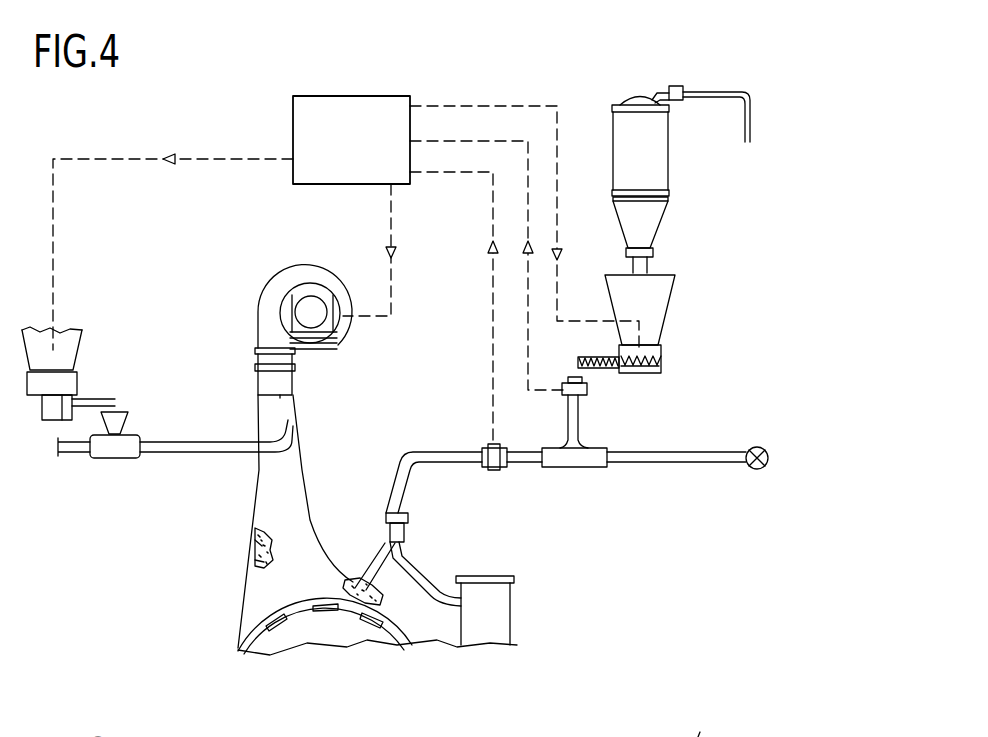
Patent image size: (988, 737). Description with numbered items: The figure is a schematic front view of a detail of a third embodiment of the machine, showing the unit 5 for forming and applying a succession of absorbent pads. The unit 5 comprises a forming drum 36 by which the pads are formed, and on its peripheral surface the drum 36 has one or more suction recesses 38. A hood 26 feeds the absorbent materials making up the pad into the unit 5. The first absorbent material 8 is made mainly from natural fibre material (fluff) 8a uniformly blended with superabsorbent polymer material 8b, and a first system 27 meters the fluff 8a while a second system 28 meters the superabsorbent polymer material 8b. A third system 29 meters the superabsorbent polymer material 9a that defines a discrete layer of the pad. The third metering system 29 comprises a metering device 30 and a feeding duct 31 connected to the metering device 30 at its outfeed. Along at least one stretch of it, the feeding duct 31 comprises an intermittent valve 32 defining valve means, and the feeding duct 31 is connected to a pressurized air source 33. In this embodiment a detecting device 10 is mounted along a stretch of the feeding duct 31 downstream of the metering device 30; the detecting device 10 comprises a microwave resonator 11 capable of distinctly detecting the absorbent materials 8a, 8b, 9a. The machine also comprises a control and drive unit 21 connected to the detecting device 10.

In FIG. 4, the unit for forming and applying absorbent pads 5 is at (236, 277).
In FIG. 4, the first absorbent material 8 is at (256, 535).
In FIG. 4, the natural fibre material (fluff) 8a is at (255, 548).
In FIG. 4, the superabsorbent polymer material (SAP) 8b is at (256, 565).
In FIG. 4, the superabsorbent polymer material (SAP) of discrete layer 9a is at (358, 605).
In FIG. 4, the detecting device 10 is at (498, 470).
In FIG. 4, the microwave resonator 11 is at (588, 391).
In FIG. 4, the control and drive unit 21 is at (336, 148).
In FIG. 4, the hood 26 is at (284, 482).
In FIG. 4, the first system for metering 27 is at (316, 297).
In FIG. 4, the second system for metering 28 is at (77, 332).
In FIG. 4, the third system for metering 29 is at (677, 234).
In FIG. 4, the metering device 30 is at (652, 294).
In FIG. 5, the metering device 30 is at (700, 732).
In FIG. 4, the feeding duct 31 is at (437, 451).
In FIG. 4, the intermittent valve 32 is at (406, 530).
In FIG. 4, the pressurized air source 33 is at (762, 448).
In FIG. 4, the forming drum 36 is at (300, 633).
In FIG. 4, the suction recesses 38 is at (263, 620).